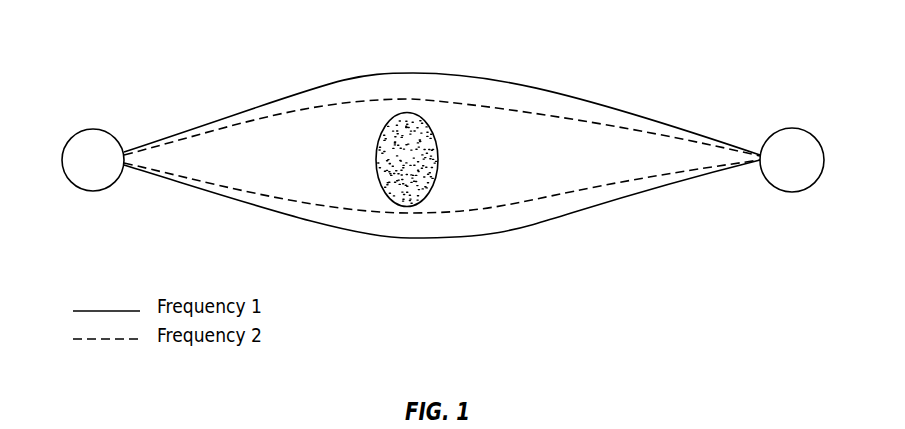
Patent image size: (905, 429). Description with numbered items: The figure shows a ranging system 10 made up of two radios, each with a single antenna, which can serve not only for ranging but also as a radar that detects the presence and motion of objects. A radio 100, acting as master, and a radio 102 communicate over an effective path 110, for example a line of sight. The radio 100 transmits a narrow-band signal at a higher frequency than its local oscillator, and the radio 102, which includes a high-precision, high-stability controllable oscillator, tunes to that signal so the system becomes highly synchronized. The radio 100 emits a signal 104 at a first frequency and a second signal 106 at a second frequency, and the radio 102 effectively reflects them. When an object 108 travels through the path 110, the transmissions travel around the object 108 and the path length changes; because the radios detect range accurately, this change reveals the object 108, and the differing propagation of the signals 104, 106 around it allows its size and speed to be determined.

The ranging system 10 is at (751, 60).
The radio 100 is at (81, 191).
The radio 102 is at (797, 191).
The signal 104 is at (518, 85).
The second signal 106 is at (487, 104).
The object 108 is at (376, 149).
The effective path 110 is at (271, 83).